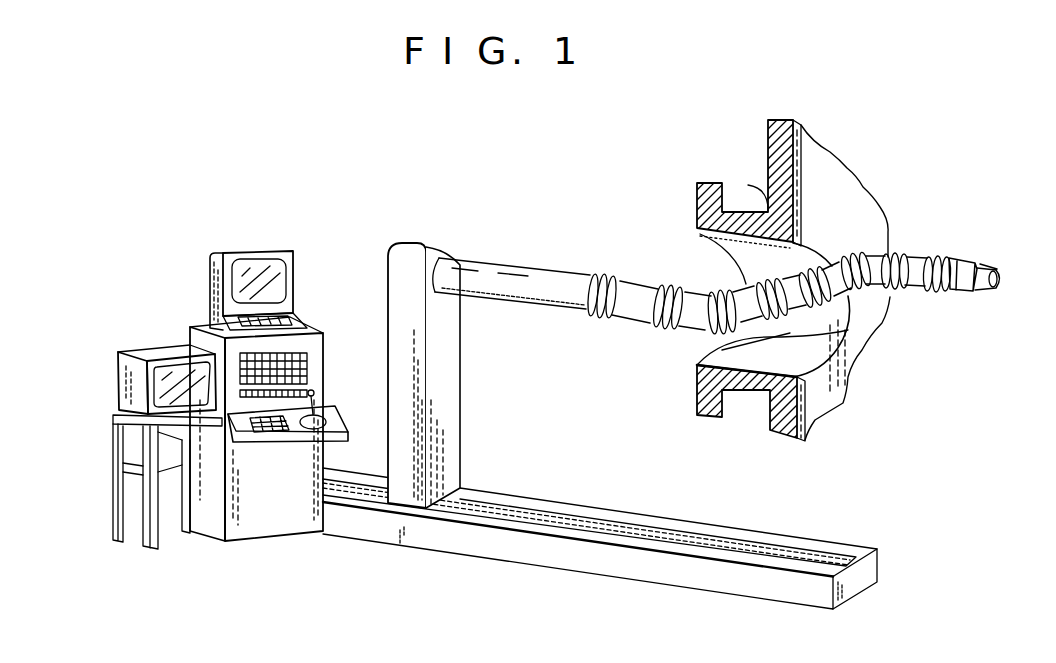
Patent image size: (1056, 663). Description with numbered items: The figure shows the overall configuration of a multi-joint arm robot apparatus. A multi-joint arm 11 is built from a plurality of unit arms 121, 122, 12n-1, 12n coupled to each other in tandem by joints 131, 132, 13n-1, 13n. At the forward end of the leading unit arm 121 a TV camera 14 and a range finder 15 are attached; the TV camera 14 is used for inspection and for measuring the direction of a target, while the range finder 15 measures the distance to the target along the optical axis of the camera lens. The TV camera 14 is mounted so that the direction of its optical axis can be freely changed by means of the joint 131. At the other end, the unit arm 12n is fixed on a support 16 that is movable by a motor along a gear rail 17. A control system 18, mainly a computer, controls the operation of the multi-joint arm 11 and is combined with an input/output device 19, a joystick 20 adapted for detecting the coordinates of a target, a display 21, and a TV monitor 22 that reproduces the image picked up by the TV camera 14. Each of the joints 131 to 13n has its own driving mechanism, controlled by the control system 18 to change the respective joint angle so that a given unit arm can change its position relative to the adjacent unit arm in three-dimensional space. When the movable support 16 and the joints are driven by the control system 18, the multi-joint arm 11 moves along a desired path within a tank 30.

The multi-joint arm 11 is at (730, 273).
The unit arm 12n is at (544, 275).
The unit arm 12n-1 is at (688, 292).
The unit arm 122 is at (873, 286).
The leading unit arm 121 is at (915, 287).
The joint 13n is at (600, 275).
The joint 13n-1 is at (670, 283).
The joint 132 is at (890, 252).
The joint 131 is at (935, 257).
The TV camera 14 is at (963, 290).
The range finder 15 is at (984, 266).
The support 16 is at (452, 451).
The gear rail 17 is at (797, 535).
The control system 18 is at (316, 284).
The input/output device 19 is at (307, 368).
The joystick 20 is at (333, 420).
The display 21 is at (237, 250).
The TV monitor 22 is at (153, 355).
The tank 30 is at (840, 166).